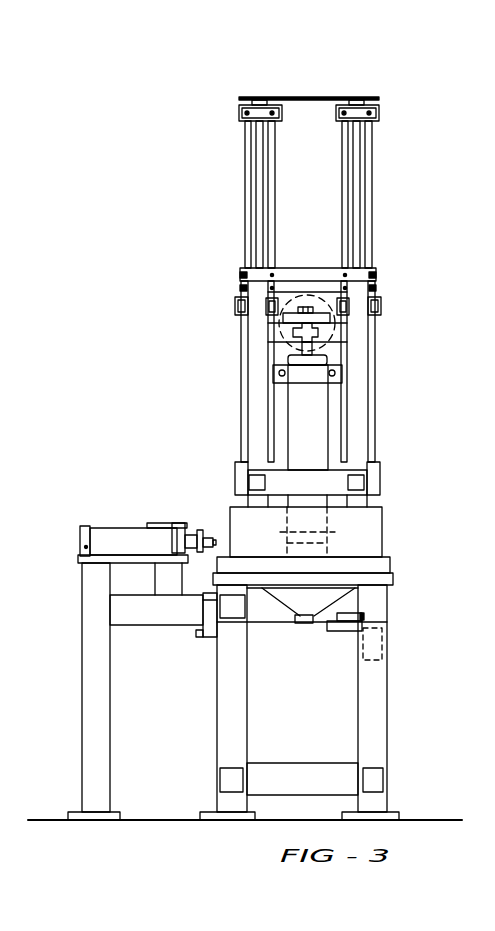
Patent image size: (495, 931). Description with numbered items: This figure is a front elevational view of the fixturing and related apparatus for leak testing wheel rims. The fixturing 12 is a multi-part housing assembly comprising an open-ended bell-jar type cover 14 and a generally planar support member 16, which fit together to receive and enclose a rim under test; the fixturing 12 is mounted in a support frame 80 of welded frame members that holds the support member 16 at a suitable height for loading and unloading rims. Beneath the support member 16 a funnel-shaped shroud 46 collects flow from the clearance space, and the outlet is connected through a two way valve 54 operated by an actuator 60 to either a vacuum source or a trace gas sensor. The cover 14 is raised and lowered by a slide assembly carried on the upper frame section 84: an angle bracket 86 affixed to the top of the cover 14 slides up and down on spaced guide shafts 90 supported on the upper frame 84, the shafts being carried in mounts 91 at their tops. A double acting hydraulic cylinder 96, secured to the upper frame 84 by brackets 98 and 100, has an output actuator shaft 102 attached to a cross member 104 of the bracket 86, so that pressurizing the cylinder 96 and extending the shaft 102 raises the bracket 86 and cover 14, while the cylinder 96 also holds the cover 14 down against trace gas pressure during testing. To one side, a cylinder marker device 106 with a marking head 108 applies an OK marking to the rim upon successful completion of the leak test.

The housing assembly 12 is at (446, 510).
The cover 14 is at (383, 538).
The support member 16 is at (392, 573).
The shroud 46 is at (270, 612).
The two way valve 54 is at (306, 624).
The actuator 60 is at (350, 612).
The support frame 80 is at (399, 674).
The upper frame section 84 is at (244, 204).
The angle bracket 86 is at (349, 340).
The guide shafts 90 is at (259, 154).
The rod brackets 91 is at (256, 112).
The double acting hydraulic cylinder 96 is at (284, 428).
The bracket 98 is at (278, 534).
The bracket 100 is at (275, 382).
The output actuator shaft 102 is at (295, 351).
The cross member 104 is at (289, 331).
The cylinder marker device 106 is at (108, 526).
The marking head 108 is at (212, 540).